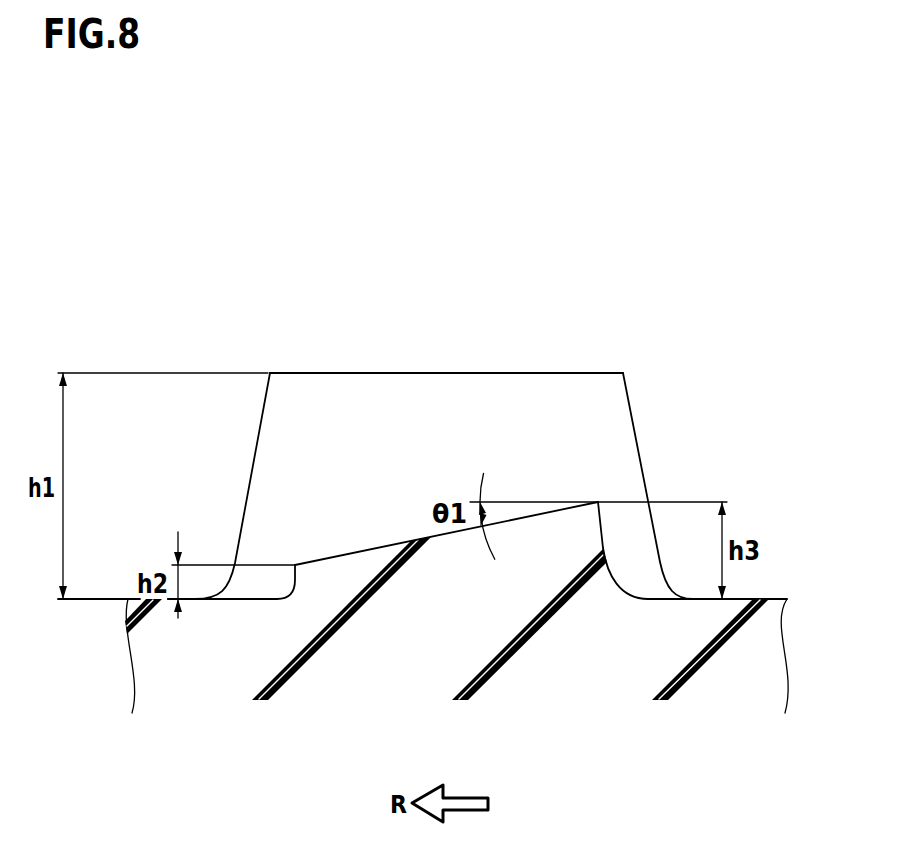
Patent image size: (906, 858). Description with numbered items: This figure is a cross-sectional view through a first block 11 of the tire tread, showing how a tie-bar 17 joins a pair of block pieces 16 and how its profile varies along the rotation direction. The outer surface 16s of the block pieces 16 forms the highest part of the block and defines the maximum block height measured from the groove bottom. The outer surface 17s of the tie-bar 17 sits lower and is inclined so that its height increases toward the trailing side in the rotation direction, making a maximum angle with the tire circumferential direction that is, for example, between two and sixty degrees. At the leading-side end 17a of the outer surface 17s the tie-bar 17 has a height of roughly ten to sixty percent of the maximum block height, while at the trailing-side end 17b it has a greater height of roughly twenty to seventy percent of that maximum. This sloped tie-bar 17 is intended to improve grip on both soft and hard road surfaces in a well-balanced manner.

The first block 11 is at (265, 308).
The block piece 16 is at (537, 373).
The outer surface of block piece 16s is at (480, 373).
The tie-bar 17 is at (395, 542).
The outer surface of tie-bar 17s is at (342, 553).
The end on the leading side of the outer surface of the tie-bar 17a is at (295, 565).
The end on the trailing side of the outer surface of the tie-bar 17b is at (598, 502).